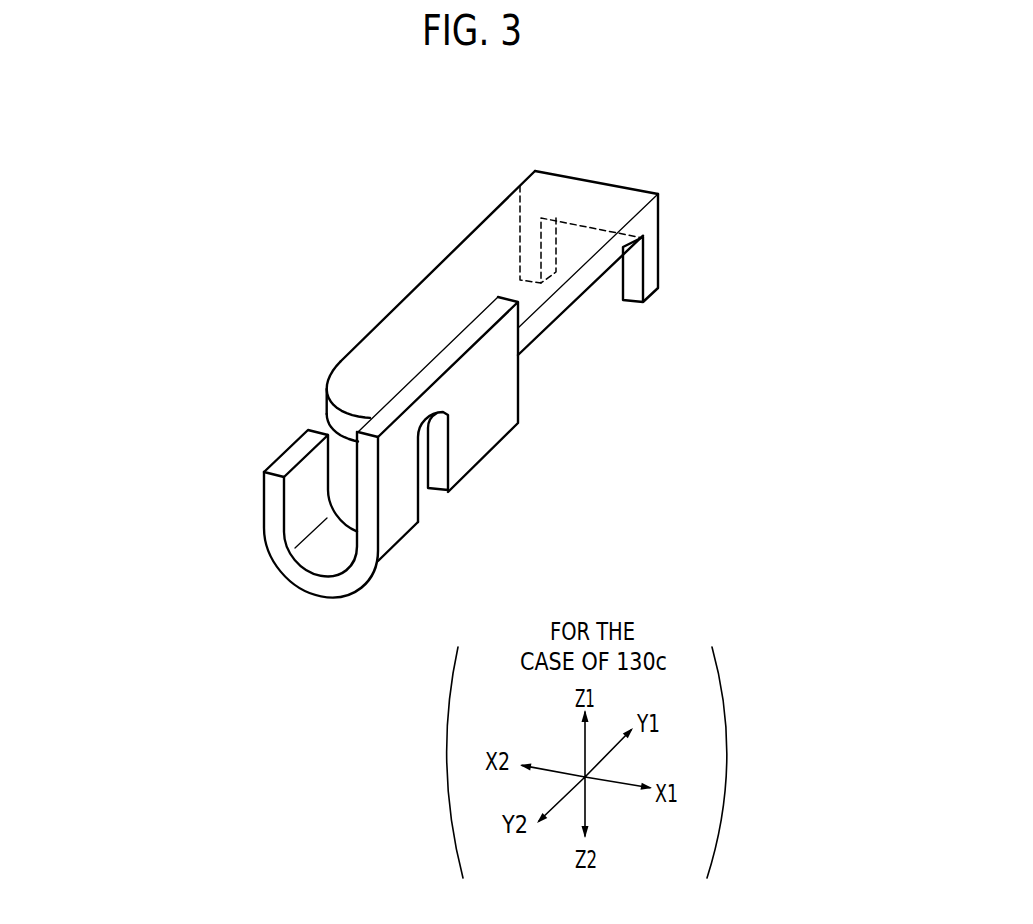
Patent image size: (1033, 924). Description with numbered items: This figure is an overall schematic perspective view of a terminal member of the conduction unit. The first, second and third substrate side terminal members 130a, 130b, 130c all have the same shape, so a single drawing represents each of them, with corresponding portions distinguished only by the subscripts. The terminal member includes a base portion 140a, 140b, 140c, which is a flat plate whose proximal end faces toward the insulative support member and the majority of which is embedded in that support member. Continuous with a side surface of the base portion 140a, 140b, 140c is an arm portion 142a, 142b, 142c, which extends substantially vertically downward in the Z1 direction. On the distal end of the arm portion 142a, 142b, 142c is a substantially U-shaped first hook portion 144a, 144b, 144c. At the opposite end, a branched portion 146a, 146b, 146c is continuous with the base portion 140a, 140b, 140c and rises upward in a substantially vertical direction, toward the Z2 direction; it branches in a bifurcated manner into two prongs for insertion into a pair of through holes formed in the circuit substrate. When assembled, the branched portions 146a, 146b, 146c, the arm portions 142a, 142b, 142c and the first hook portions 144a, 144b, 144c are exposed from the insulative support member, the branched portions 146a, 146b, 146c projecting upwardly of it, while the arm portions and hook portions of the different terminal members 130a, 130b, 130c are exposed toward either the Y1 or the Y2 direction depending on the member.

The first substrate side terminal member 130a is at (446, 348).
The second substrate side terminal member 130b is at (446, 348).
The third substrate side terminal member 130c is at (425, 117).
The base portion 140a is at (549, 306).
The base portion 140b is at (549, 306).
The base portion 140c is at (530, 293).
The arm portion 142a is at (539, 429).
The arm portion 142b is at (539, 429).
The arm portion 142c is at (482, 433).
The first hook portion 144a is at (213, 510).
The first hook portion 144b is at (213, 510).
The first hook portion 144c is at (275, 495).
The branched portion 146a is at (546, 225).
The branched portion 146b is at (546, 225).
The branched portion 146c is at (692, 175).